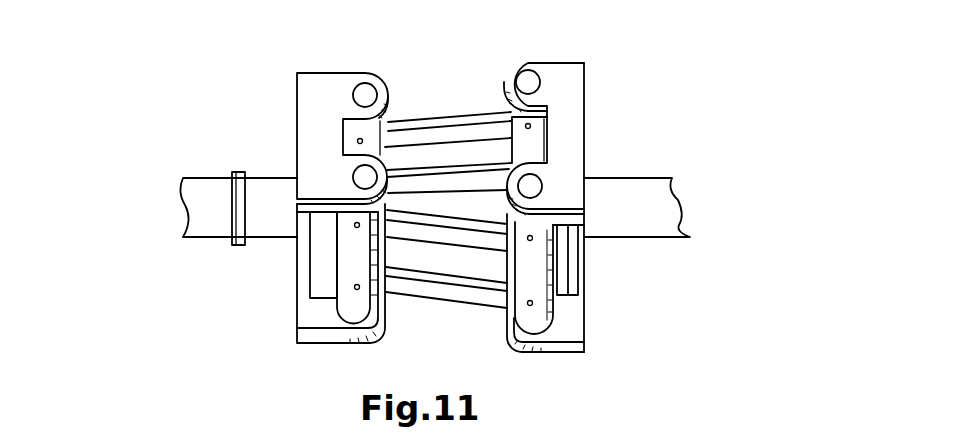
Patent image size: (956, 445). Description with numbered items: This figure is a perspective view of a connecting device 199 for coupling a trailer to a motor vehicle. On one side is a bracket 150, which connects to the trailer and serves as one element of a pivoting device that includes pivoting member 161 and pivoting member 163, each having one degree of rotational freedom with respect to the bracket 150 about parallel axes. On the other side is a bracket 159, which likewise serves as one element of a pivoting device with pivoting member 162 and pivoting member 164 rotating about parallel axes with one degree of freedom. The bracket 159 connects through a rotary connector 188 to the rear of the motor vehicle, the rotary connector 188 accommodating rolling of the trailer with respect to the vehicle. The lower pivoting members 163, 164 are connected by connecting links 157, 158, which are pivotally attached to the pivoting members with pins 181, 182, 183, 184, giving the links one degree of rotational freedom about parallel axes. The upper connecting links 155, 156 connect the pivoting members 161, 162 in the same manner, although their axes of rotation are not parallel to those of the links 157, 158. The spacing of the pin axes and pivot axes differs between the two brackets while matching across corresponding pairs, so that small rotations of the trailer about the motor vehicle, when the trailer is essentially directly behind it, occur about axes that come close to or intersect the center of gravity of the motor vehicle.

The bracket 150 is at (570, 157).
The connecting link 155 is at (423, 121).
The connecting link 156 is at (443, 174).
The connecting link 157 is at (445, 232).
The connecting link 158 is at (473, 297).
The bracket 159 is at (326, 79).
The pivoting member 161 is at (534, 143).
The pivoting member 162 is at (355, 141).
The pivoting member 163 is at (537, 322).
The pivoting member 164 is at (355, 308).
The pin 181 is at (534, 239).
The pin 182 is at (353, 228).
The pin 183 is at (534, 304).
The pin 184 is at (353, 290).
The rotary connector 188 is at (237, 170).
The connecting device 199 is at (656, 344).